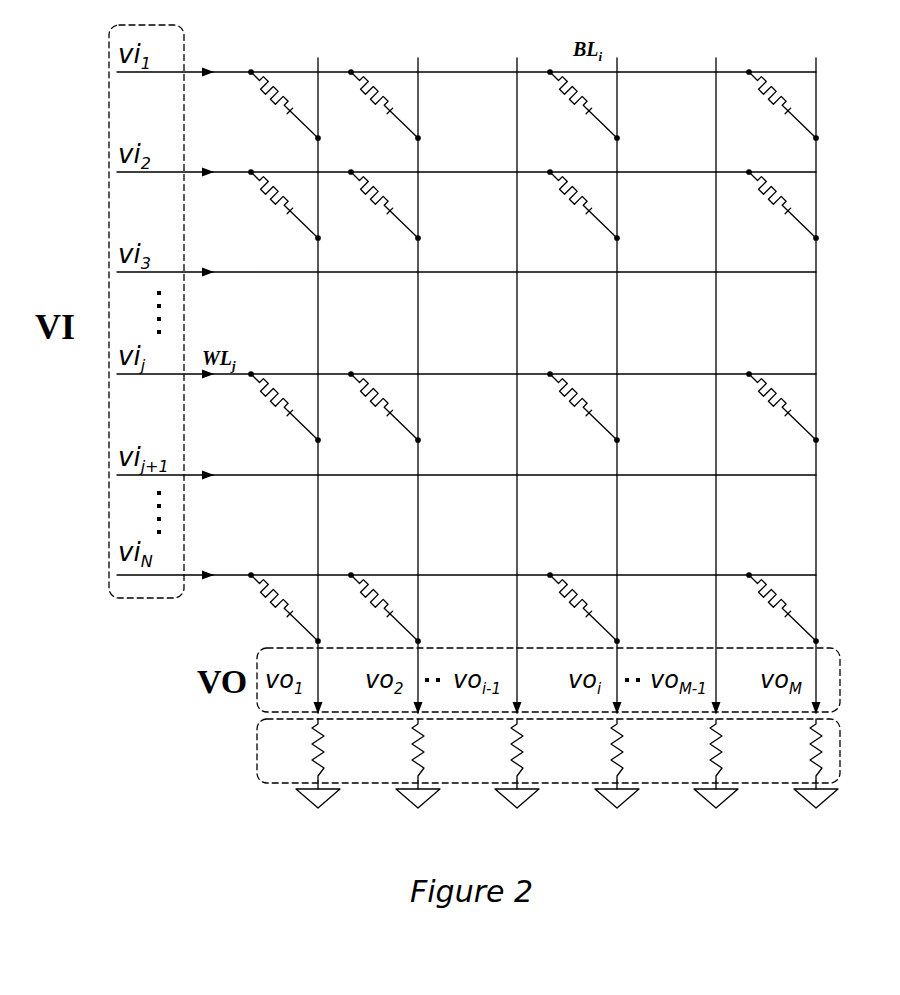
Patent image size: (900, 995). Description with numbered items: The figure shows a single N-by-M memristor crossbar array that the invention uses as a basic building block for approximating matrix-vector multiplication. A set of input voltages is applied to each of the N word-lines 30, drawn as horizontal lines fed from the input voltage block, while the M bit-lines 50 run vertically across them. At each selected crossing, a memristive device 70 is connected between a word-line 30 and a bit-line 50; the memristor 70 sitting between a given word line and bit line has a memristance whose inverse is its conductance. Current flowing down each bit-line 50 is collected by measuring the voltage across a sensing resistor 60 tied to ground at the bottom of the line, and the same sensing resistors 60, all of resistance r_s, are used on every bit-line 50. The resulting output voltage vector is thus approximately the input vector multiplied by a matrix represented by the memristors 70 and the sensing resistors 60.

The word-line 30 is at (803, 372).
The bit-line 50 is at (619, 91).
The sensing resistor 60 is at (828, 761).
The memristive device 70 is at (603, 394).